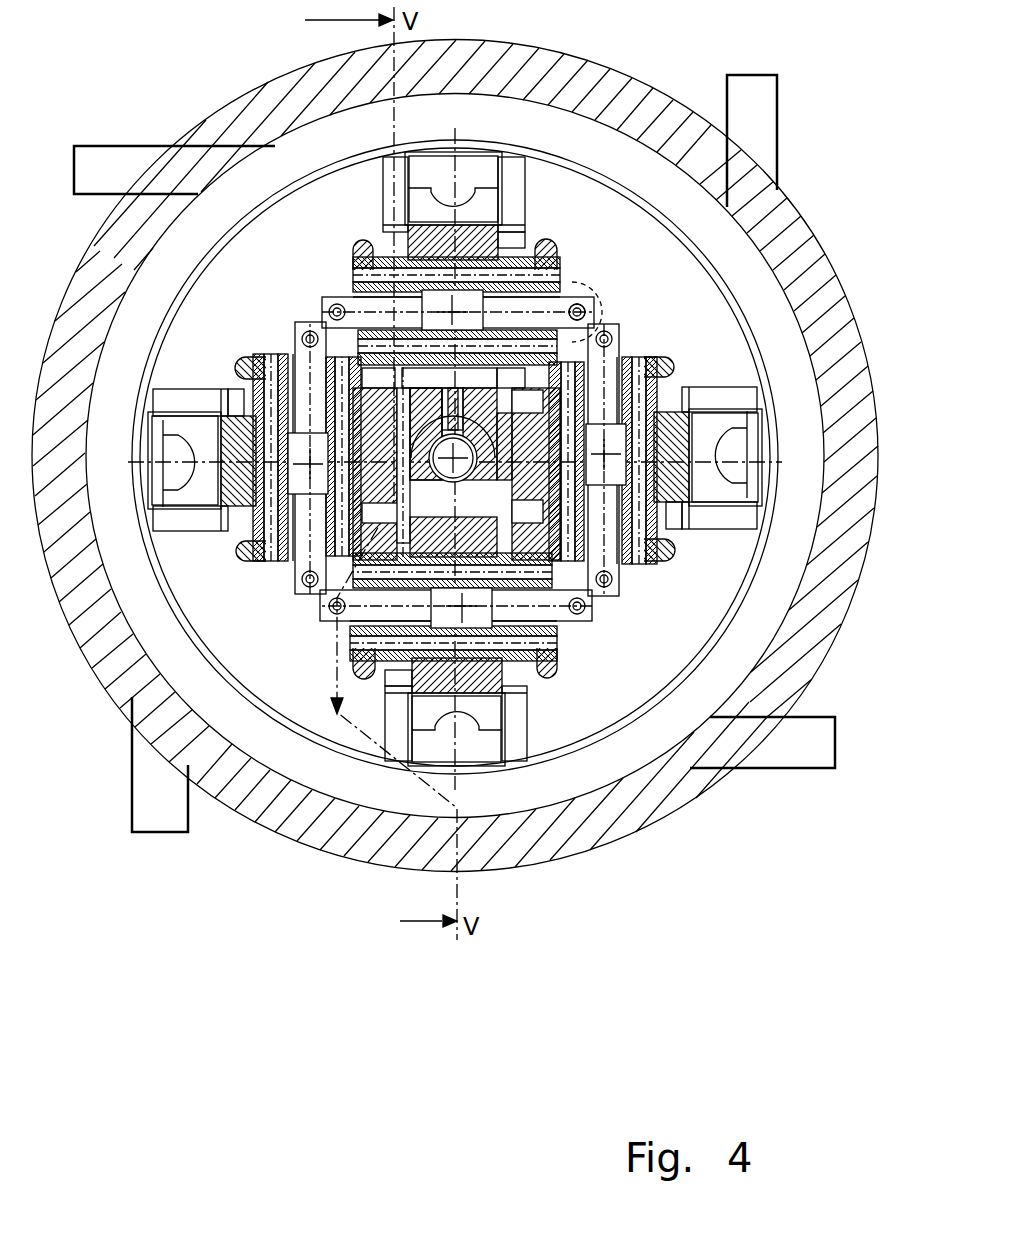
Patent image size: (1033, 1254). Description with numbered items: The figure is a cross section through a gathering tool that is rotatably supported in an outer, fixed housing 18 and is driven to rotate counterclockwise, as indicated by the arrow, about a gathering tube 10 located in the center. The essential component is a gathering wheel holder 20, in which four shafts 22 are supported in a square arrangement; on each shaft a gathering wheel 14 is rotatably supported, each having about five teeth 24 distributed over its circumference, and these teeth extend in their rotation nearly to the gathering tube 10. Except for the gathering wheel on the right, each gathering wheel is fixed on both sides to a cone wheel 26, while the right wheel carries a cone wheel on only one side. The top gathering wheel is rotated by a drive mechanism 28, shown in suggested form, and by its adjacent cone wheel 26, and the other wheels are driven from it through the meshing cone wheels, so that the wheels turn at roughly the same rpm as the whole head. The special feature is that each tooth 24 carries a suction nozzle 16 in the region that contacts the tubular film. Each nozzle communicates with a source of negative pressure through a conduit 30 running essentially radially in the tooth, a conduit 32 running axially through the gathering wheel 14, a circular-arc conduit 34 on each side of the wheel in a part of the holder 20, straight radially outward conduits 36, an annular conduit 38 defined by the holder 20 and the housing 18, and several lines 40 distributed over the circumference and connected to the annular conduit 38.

The gathering tube 10 is at (456, 463).
The gathering wheel 14 is at (427, 237).
The suction nozzle 16 is at (414, 465).
The housing 18 is at (353, 832).
The gathering wheel holder 20 is at (330, 725).
The shaft 22 is at (610, 353).
The tooth 24 is at (417, 195).
The cone wheel 26 is at (543, 247).
The drive mechanism 28 is at (578, 280).
The conduit 30 is at (474, 452).
The conduit 32 is at (449, 379).
The conduit 34 is at (510, 238).
The conduit 36 is at (508, 177).
The annular conduit 38 is at (240, 730).
The line 40 is at (160, 820).